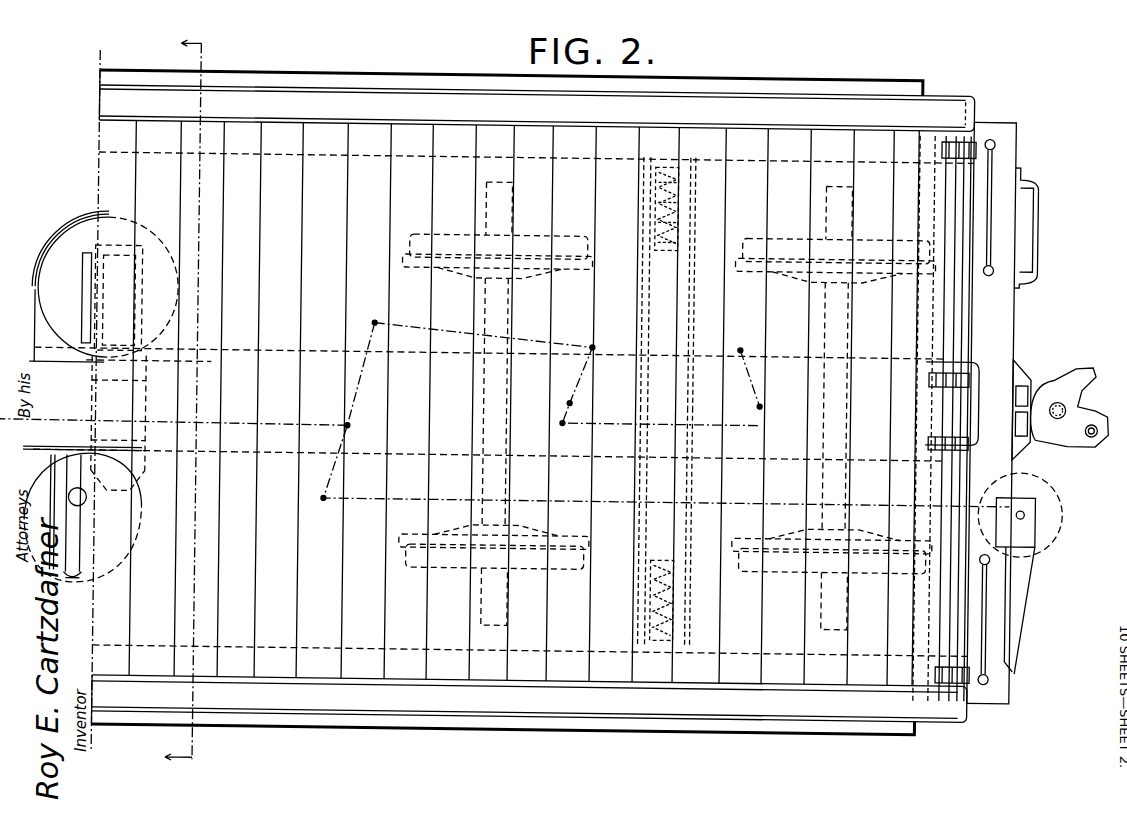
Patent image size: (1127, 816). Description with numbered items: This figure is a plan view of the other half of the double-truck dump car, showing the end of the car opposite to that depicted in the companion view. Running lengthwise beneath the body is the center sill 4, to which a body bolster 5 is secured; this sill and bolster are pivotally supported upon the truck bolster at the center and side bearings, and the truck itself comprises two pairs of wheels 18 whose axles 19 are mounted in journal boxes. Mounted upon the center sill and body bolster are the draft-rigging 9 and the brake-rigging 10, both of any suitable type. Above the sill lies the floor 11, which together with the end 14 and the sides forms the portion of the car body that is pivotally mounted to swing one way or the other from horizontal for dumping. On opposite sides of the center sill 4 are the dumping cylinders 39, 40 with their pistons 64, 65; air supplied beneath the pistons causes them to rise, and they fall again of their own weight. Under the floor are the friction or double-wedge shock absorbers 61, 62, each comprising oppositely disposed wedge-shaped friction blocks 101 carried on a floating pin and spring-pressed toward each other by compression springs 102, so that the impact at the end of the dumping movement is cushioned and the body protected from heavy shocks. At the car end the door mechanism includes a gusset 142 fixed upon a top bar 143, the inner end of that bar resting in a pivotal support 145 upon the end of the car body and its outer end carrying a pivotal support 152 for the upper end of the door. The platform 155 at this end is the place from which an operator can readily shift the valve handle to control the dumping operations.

The center sill 4 is at (270, 352).
The bolster 5 is at (187, 404).
The draft-rigging 9 is at (1046, 372).
The brake-rigging 10 is at (352, 392).
The floor 11 is at (278, 168).
The end 14 is at (1015, 306).
The wheels 18 is at (569, 234).
The axles 19 is at (486, 412).
The dumping cylinder 39 is at (105, 568).
The dumping cylinder 40 is at (78, 262).
The shock absorber 61 is at (647, 612).
The shock absorber 62 is at (645, 201).
The piston 64 is at (92, 500).
The piston 65 is at (60, 300).
The wedge-shaped friction blocks 101 is at (686, 200).
The compression springs 102 is at (678, 240).
The gusset 142 is at (963, 206).
The top bar 143 is at (966, 322).
The pivotal support 145 is at (952, 406).
The pivotal support 152 is at (978, 138).
The platform 155 is at (1000, 400).